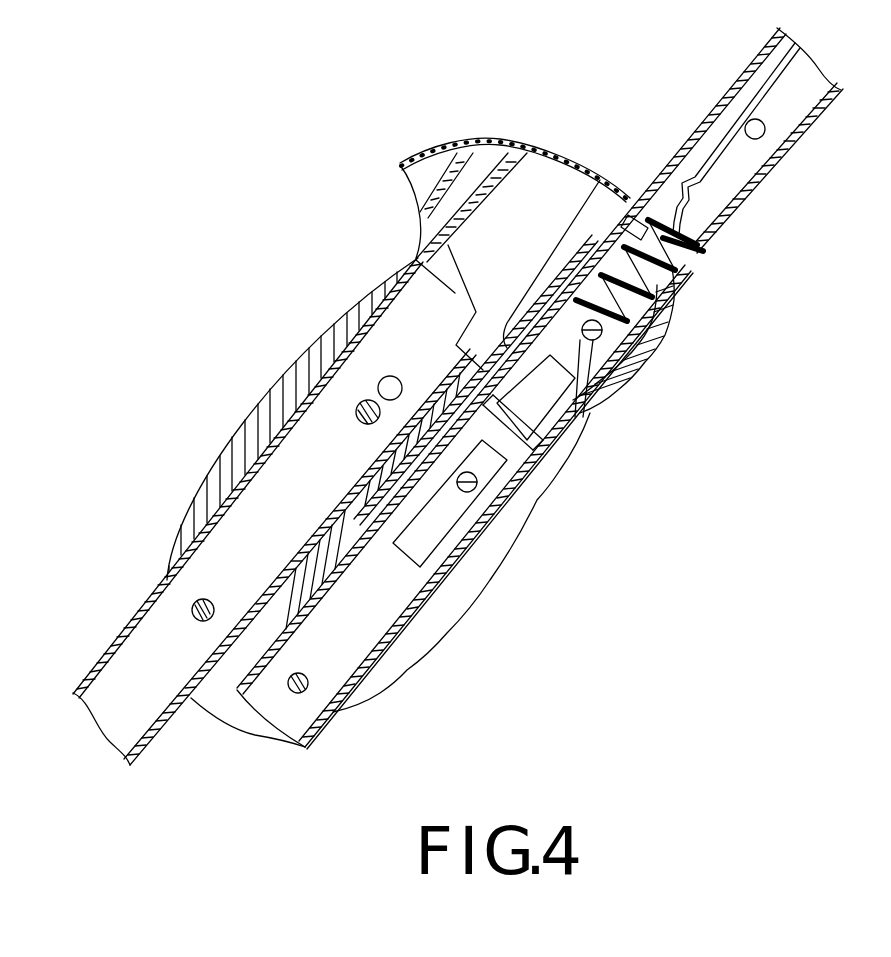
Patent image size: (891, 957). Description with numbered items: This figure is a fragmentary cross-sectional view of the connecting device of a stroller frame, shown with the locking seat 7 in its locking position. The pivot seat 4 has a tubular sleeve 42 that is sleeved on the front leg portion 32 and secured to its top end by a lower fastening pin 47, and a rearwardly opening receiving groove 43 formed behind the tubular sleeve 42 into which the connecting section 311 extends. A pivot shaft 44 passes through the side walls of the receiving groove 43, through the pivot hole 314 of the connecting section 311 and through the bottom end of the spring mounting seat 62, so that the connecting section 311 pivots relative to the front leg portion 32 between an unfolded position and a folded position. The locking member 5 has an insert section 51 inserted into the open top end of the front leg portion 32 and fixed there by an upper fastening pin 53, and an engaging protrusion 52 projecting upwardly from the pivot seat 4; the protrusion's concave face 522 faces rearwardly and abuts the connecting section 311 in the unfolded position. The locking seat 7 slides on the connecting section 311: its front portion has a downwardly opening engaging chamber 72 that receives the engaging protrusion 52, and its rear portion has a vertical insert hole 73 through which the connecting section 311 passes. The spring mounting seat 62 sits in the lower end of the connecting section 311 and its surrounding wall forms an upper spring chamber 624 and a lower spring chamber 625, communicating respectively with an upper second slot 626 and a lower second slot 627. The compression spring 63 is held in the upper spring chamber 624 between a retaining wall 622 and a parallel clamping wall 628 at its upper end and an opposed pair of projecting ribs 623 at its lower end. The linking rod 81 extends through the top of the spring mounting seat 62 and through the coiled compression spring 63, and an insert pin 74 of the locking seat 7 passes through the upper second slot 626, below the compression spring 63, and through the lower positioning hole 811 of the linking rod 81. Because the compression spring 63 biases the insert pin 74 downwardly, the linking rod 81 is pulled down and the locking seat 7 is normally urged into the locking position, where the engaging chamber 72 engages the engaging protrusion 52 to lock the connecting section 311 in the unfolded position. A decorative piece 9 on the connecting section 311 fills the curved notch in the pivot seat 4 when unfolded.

The pivot seat 4 is at (243, 443).
The tubular sleeve 42 is at (290, 400).
The receiving groove 43 is at (330, 398).
The lower fastening pin 47 is at (198, 600).
The front leg portion 32 is at (173, 730).
The locking member 5 is at (415, 262).
The insert section 51 is at (423, 333).
The engaging protrusion 52 is at (457, 280).
The upper fastening pin 53 is at (366, 400).
The locking seat 7 is at (516, 290).
The engaging chamber 72 is at (500, 245).
The concave face 522 is at (545, 268).
The upper spring chamber 624 is at (612, 235).
The linking rod 81 is at (735, 122).
The connecting section 311 is at (795, 147).
The retaining wall 622 is at (705, 240).
The upper second slot 626 is at (672, 300).
The clamping wall 628 is at (687, 288).
The compression spring 63 is at (668, 337).
The vertical insert hole 73 is at (662, 363).
The projecting ribs 623 is at (633, 385).
The insert pin 74 is at (615, 410).
The lower positioning hole 811 is at (592, 341).
The lower spring chamber 625 is at (522, 478).
The decorative piece 9 is at (508, 535).
The lower second slot 627 is at (455, 530).
The spring mounting seat 62 is at (383, 640).
The pivot hole 314 is at (333, 713).
The pivot shaft 44 is at (296, 694).